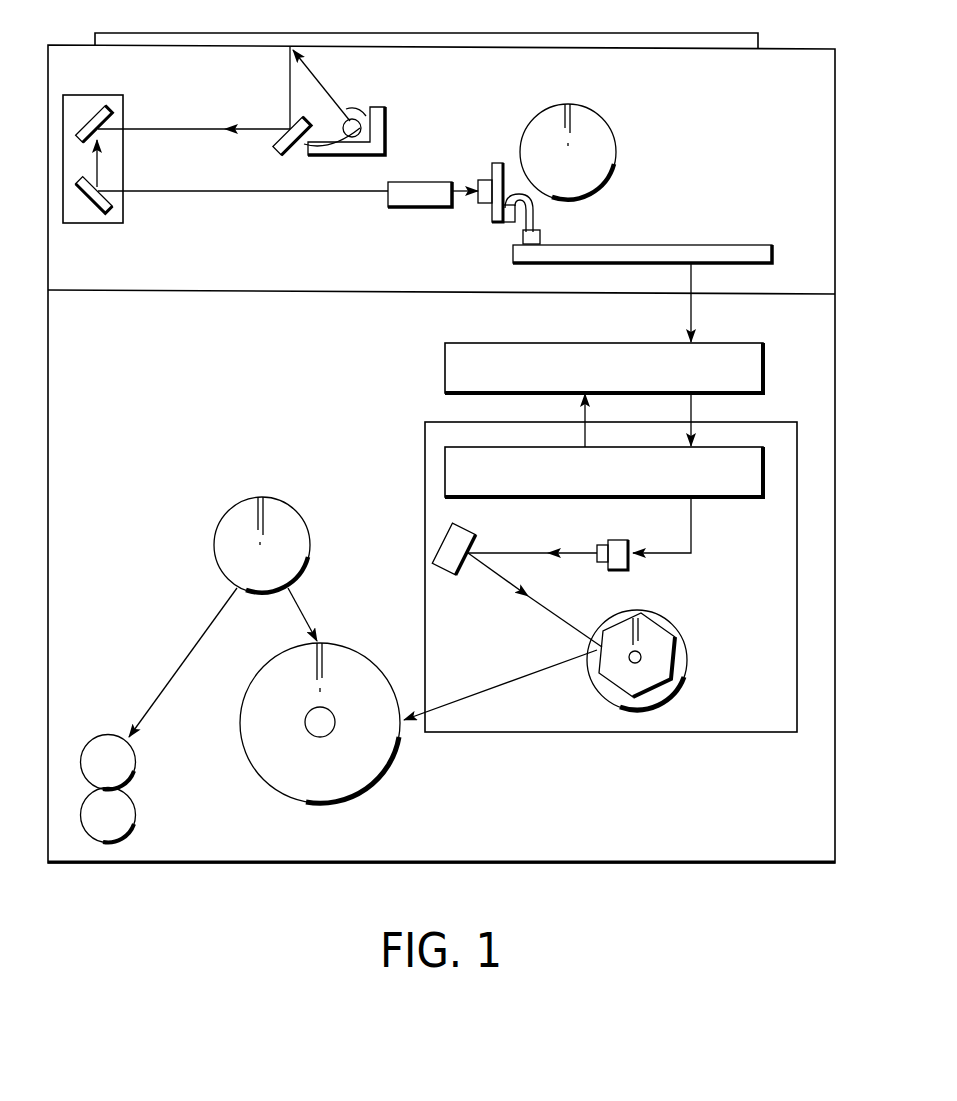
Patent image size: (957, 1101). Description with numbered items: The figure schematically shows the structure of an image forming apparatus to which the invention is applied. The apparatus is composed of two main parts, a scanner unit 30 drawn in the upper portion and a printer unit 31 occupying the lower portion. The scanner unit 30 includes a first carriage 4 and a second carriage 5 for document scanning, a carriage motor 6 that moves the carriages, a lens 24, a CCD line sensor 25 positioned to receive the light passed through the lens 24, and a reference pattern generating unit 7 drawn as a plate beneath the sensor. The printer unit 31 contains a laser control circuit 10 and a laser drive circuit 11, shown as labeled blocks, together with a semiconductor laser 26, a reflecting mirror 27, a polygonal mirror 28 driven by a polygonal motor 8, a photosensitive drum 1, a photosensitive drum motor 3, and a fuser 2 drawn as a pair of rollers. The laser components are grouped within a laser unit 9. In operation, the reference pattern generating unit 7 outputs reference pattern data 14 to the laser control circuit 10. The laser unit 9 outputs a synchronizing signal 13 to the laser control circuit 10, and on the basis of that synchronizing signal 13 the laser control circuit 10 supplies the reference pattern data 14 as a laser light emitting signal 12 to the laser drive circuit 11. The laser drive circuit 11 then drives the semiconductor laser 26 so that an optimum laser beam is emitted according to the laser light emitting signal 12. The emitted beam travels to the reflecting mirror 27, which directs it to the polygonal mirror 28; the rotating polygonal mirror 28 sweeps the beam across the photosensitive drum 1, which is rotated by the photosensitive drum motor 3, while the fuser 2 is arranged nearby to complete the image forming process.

The photosensitive drum 1 is at (370, 773).
The fuser 2 is at (138, 800).
The photosensitive drum motor 3 is at (295, 550).
The first carriage 4 is at (385, 116).
The second carriage 5 is at (123, 112).
The carriage motor 6 is at (603, 156).
The reference pattern generating unit 7 is at (716, 245).
The polygonal motor 8 is at (687, 665).
The laser unit 9 is at (730, 732).
The laser control circuit 10 is at (763, 365).
The laser drive circuit 11 is at (730, 500).
The laser light emitting signal 12 is at (702, 407).
The synchronizing signal 13 is at (580, 418).
The reference pattern data 14 is at (705, 312).
The lens 24 is at (433, 181).
The CCD line sensor 25 is at (492, 165).
The semiconductor laser 26 is at (615, 538).
The reflecting mirror 27 is at (470, 524).
The polygonal mirror 28 is at (660, 628).
The scanner unit 30 is at (783, 47).
The printer unit 31 is at (778, 865).